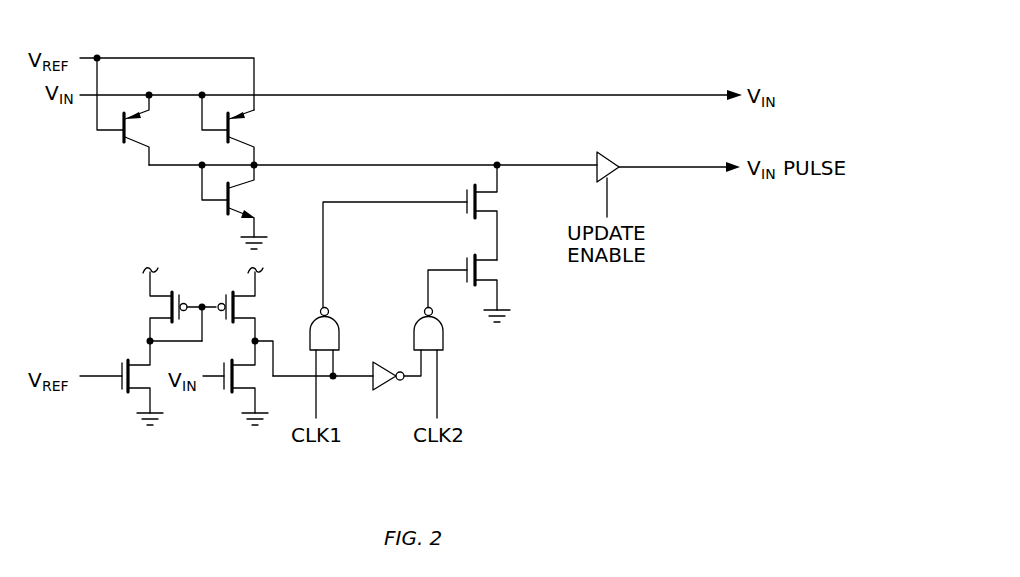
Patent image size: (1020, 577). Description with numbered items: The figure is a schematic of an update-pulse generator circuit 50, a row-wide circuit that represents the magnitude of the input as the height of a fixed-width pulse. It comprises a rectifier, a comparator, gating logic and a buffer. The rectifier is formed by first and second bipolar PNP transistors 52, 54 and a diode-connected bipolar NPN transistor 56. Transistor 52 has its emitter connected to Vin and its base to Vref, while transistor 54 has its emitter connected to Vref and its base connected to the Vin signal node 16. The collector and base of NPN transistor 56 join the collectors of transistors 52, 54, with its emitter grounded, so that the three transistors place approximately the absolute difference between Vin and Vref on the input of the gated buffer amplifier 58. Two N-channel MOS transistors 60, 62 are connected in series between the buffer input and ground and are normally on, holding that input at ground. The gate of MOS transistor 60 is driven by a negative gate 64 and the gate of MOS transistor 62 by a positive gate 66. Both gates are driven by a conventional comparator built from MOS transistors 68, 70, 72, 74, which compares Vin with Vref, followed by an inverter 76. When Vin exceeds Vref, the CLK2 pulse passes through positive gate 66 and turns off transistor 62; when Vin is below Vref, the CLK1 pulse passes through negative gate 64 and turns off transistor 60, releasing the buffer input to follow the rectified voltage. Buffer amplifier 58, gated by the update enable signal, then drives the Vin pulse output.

The update-pulse generator circuit 50 is at (671, 57).
The Vin signal node 16 is at (428, 94).
The first bipolar PNP transistor 52 is at (127, 150).
The second bipolar PNP transistor 54 is at (256, 129).
The diode-connected bipolar NPN transistor 56 is at (256, 201).
The gated buffer amplifier 58 is at (612, 155).
The N-channel MOS transistor 60 is at (500, 198).
The N-channel MOS transistor 62 is at (500, 271).
The negative gate 64 is at (341, 322).
The positive gate 66 is at (445, 342).
The MOS transistor 68 is at (175, 290).
The MOS transistor 70 is at (250, 312).
The MOS transistor 72 is at (122, 360).
The MOS transistor 74 is at (225, 398).
The inverter 76 is at (386, 389).